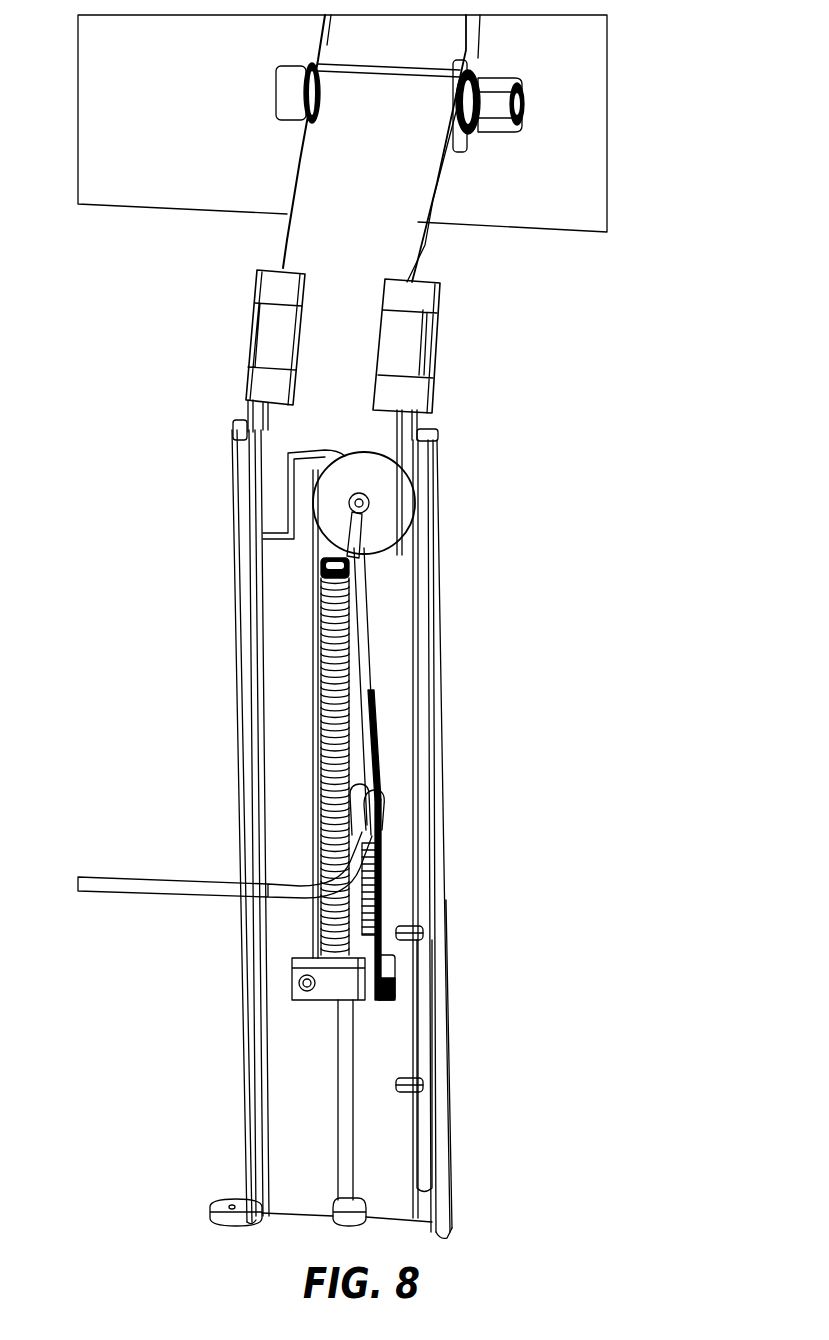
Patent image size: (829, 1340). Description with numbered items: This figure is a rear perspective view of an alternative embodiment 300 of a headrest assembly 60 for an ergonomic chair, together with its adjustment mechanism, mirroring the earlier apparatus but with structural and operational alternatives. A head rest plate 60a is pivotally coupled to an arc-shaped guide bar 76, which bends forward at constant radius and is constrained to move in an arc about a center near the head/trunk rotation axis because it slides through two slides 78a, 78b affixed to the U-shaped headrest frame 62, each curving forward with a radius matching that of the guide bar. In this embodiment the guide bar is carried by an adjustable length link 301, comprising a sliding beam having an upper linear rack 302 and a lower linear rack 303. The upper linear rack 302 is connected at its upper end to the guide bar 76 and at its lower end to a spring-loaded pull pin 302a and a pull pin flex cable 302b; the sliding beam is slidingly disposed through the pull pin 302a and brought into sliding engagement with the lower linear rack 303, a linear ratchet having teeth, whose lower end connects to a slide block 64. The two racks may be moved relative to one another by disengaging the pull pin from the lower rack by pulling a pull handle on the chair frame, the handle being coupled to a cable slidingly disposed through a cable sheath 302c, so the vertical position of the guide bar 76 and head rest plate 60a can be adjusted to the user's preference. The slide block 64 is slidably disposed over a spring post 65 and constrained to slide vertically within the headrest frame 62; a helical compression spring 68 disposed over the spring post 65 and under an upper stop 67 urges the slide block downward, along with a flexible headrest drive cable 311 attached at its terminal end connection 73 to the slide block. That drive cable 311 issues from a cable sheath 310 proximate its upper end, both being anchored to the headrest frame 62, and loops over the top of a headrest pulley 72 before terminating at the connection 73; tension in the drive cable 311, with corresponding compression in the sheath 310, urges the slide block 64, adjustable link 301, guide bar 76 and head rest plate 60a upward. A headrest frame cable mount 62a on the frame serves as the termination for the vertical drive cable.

The alternative embodiment of headrest assembly 300 is at (600, 1183).
The headrest assembly 60 is at (597, 183).
The head rest plate 60a is at (575, 77).
The slide 78a is at (252, 318).
The slide 78b is at (432, 268).
The arc-shaped guide bar 76 is at (432, 437).
The headrest pulley 72 is at (345, 563).
The upper stop 67 is at (367, 547).
The upper linear rack 302 is at (362, 618).
The adjustable length link 301 is at (370, 657).
The flexible headrest drive cable 311 is at (418, 748).
The helical compression spring 68 is at (383, 815).
The pull pin flex cable 302b is at (372, 826).
The spring-loaded pull pin 302a is at (358, 847).
The lower linear rack 303 is at (378, 925).
The slide block 64 is at (392, 982).
The cable sheath 310 is at (425, 1052).
The cable sheath 302c is at (137, 882).
The terminal end connection 73 is at (300, 962).
The spring post 65 is at (335, 1035).
The headrest frame cable mount 62a is at (215, 1205).
The headrest frame 62 is at (450, 1205).